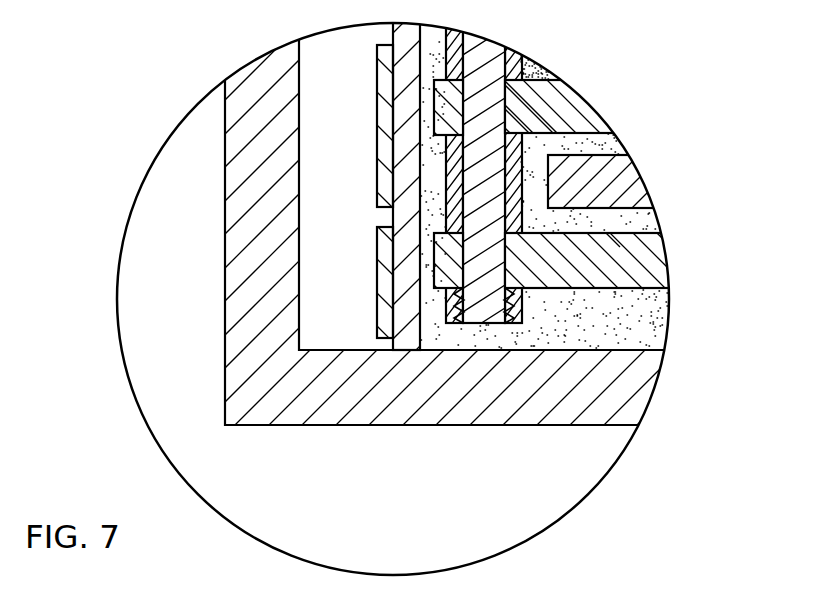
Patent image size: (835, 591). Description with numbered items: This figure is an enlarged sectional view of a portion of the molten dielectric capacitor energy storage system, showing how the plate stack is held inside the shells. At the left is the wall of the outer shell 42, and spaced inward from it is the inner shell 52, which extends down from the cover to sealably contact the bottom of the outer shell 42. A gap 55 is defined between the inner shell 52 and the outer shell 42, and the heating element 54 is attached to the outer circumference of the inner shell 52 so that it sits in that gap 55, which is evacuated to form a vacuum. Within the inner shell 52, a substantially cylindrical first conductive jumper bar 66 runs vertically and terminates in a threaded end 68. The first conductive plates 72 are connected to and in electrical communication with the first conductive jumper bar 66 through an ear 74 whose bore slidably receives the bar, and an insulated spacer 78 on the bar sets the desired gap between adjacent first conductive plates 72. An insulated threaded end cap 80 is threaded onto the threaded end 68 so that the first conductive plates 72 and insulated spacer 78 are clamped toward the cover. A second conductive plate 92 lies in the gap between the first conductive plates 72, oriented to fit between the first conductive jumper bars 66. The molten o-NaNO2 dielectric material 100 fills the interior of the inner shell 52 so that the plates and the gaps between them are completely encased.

The outer shell 42 is at (225, 119).
The inner shell 52 is at (400, 218).
The heating element 54 is at (382, 303).
The gap 55 is at (318, 78).
The first conductive jumper bar 66 is at (477, 39).
The threaded end 68 is at (477, 318).
The first conductive plate 72 is at (583, 103).
The ear 74 is at (440, 117).
The insulated spacer 78 is at (518, 53).
The insulated threaded end cap 80 is at (446, 325).
The second conductive plate 92 is at (637, 188).
The molten o-NaNO2 dielectric material 100 is at (617, 147).